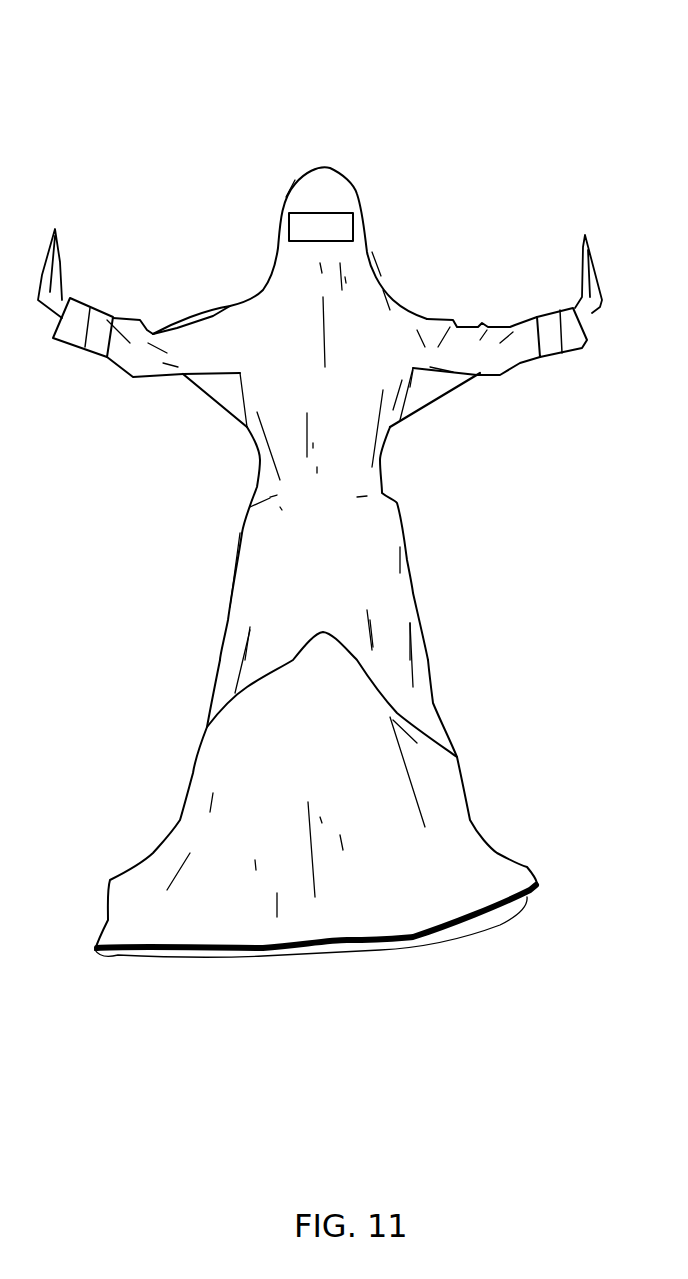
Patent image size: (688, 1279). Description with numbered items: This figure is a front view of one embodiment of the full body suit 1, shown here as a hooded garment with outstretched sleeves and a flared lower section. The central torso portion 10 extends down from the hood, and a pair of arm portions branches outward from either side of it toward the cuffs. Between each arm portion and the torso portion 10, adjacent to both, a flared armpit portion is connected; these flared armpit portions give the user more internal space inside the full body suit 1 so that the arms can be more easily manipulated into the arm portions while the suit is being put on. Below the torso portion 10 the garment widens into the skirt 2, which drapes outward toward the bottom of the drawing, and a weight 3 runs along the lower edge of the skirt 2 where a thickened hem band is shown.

The full body suit 1 is at (492, 168).
The skirt 2 is at (118, 816).
The weight 3 is at (420, 933).
The torso portion 10 is at (368, 365).